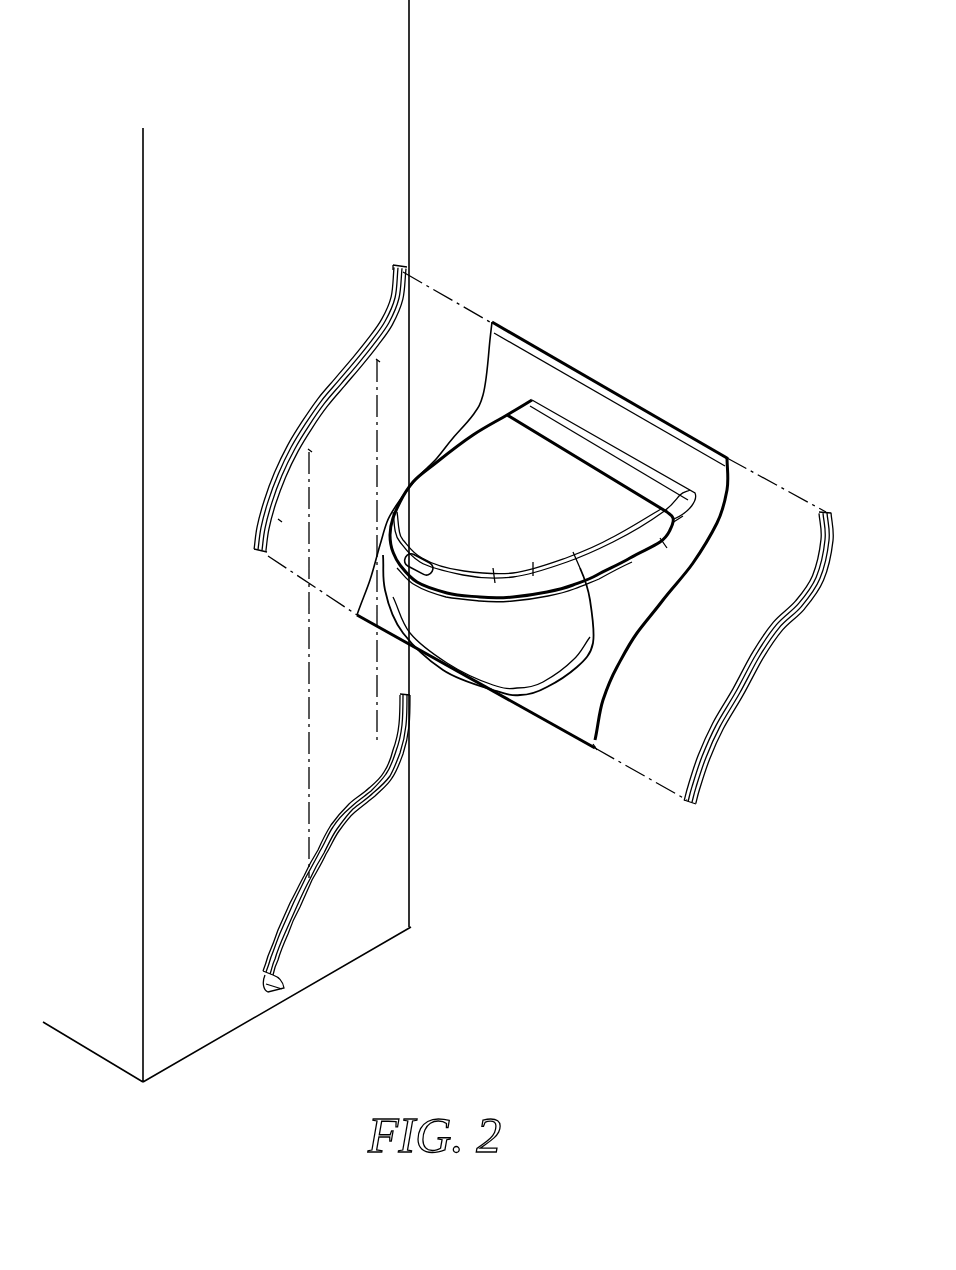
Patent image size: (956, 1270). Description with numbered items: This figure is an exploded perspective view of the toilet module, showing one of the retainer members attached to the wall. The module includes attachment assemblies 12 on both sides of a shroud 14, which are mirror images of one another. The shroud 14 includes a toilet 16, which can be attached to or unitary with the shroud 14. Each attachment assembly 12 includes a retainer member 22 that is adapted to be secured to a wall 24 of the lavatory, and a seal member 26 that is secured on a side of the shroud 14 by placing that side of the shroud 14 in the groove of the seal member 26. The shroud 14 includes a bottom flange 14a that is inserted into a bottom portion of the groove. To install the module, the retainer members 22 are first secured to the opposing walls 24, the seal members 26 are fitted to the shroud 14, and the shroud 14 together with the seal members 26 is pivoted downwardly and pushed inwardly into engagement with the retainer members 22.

The attachment assembly 12 is at (829, 500).
The shroud 14 is at (554, 710).
The bottom flange 14a is at (595, 742).
The toilet 16 is at (493, 666).
The retainer member 22 is at (337, 845).
The wall 24 is at (229, 670).
The seal member 26 is at (330, 402).